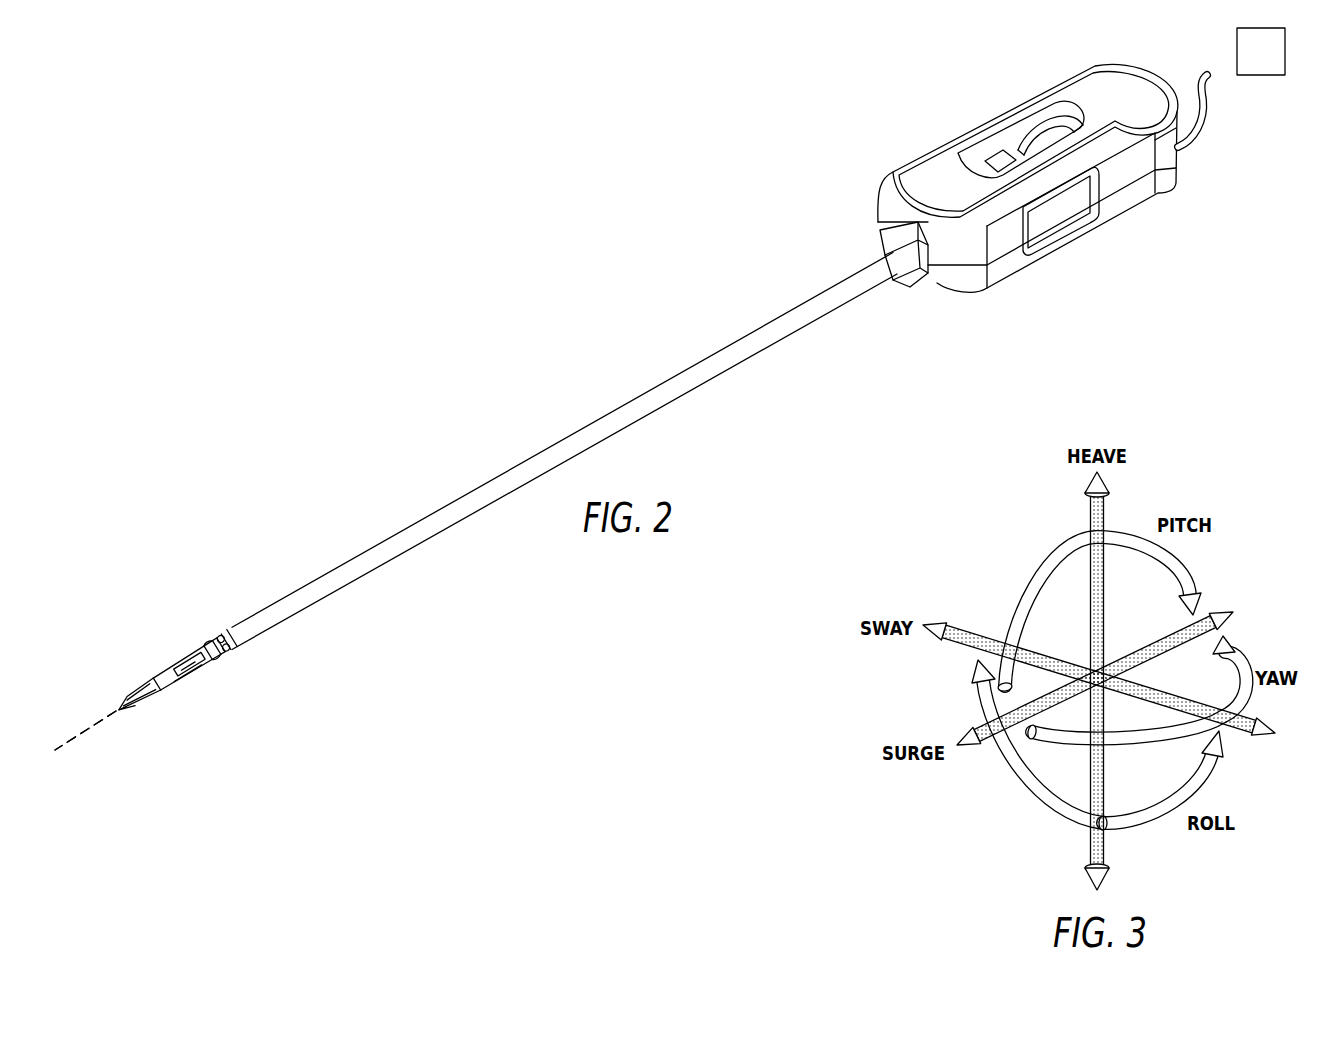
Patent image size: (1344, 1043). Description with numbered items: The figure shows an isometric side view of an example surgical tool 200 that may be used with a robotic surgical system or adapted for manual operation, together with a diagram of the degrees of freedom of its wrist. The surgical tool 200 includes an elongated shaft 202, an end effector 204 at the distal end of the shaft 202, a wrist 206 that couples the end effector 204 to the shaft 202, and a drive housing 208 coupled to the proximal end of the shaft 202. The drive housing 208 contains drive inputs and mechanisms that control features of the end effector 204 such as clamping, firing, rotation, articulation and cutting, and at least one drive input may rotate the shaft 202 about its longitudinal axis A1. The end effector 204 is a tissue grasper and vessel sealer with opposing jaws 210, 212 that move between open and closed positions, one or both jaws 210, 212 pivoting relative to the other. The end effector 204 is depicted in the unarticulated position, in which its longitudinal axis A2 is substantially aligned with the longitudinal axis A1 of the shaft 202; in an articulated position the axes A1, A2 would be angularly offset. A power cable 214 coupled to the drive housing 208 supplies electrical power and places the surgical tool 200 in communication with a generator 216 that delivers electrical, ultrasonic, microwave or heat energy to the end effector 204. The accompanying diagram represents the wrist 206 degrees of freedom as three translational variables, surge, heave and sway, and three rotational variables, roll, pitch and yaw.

The surgical tool 200 is at (613, 203).
The elongated shaft 202 is at (562, 440).
The end effector 204 is at (147, 656).
The wrist 206 is at (215, 669).
The drive housing 208 is at (937, 147).
The jaw 210 is at (132, 690).
The jaw 212 is at (137, 702).
The power cable 214 is at (1220, 129).
The generator 216 is at (1207, 74).
The longitudinal axis of the shaft A1 is at (60, 748).
The longitudinal axis of the end effector A2 is at (60, 748).